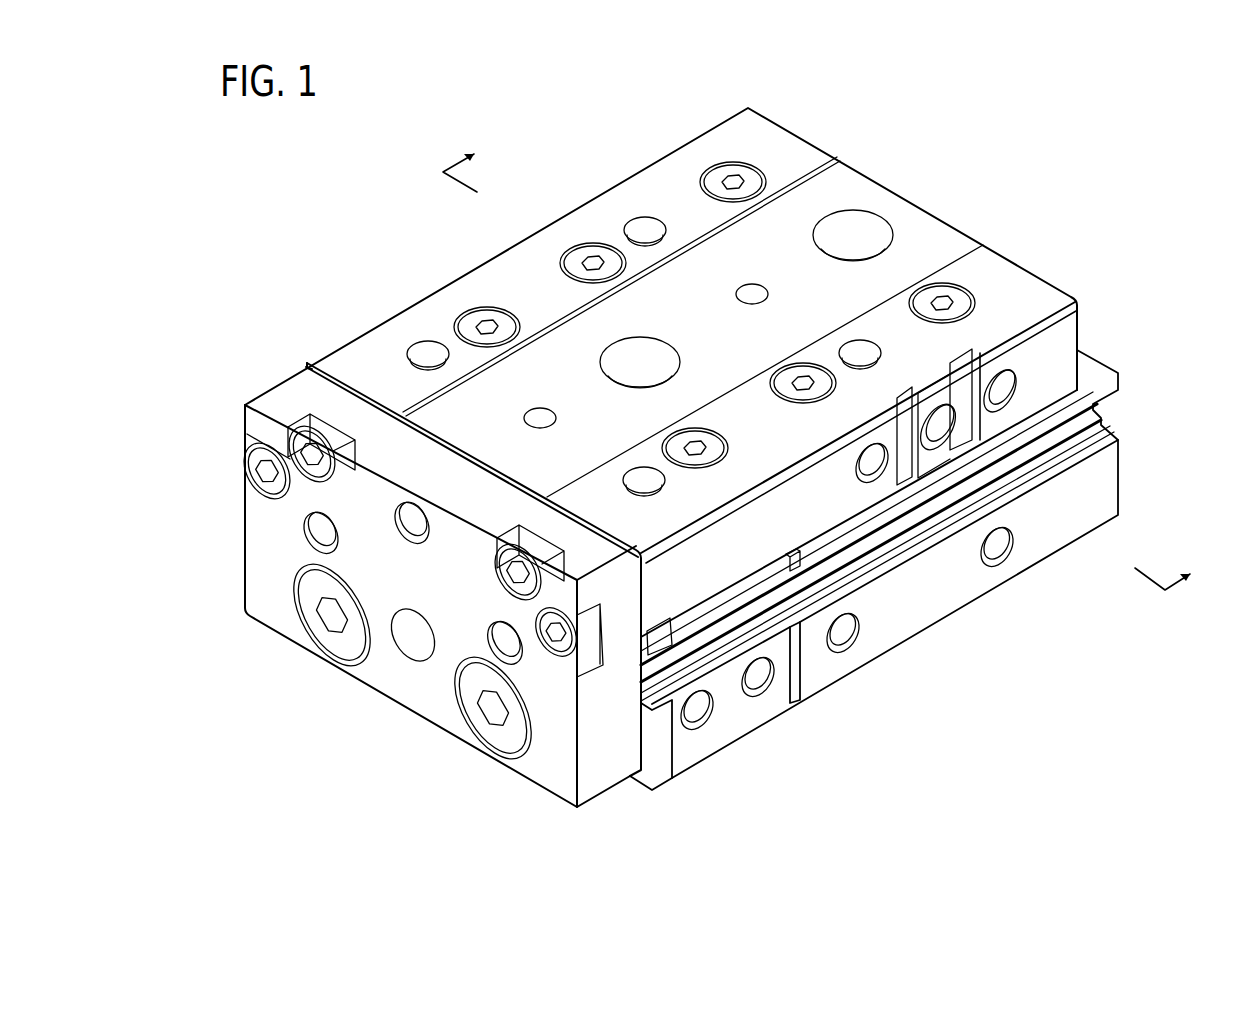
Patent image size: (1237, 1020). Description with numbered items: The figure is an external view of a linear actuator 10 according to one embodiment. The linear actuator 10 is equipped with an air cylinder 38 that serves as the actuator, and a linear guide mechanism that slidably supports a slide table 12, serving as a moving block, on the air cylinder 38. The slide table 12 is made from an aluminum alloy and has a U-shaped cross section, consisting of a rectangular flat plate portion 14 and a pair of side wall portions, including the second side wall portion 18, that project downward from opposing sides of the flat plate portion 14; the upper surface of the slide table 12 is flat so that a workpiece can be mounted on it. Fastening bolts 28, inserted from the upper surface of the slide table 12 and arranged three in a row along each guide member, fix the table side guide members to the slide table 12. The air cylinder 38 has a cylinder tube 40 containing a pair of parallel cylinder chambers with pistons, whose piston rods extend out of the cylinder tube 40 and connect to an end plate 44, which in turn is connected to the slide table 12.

The linear actuator 10 is at (345, 220).
The slide table 12 is at (940, 196).
The flat plate portion 14 is at (843, 182).
The second side wall portion 18 is at (1060, 338).
The fastening bolt 28 is at (718, 174).
The air cylinder 38 is at (933, 645).
The cylinder tube 40 is at (1044, 547).
The end plate 44 is at (258, 557).